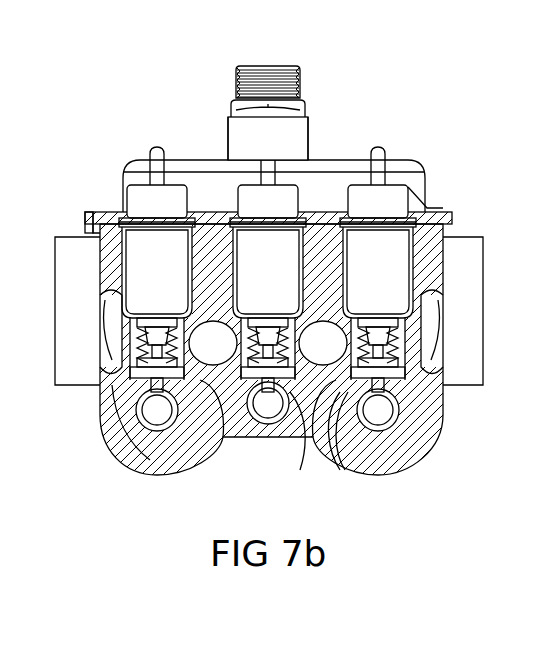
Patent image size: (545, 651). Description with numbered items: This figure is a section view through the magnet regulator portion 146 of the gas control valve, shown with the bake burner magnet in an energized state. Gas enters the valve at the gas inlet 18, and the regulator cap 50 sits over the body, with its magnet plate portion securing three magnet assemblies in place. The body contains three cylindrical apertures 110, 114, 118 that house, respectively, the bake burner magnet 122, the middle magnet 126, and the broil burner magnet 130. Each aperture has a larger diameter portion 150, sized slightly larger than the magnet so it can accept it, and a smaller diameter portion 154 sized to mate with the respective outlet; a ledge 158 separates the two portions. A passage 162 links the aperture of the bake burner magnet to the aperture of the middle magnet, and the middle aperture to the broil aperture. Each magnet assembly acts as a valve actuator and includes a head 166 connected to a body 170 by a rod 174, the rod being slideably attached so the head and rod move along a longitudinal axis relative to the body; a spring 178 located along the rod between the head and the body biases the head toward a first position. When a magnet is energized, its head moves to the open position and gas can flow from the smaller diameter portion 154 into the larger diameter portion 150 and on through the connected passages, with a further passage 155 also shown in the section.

The gas inlet 18 is at (483, 244).
The regulator cap 50 is at (135, 162).
The cylindrical aperture 110 is at (92, 226).
The cylindrical aperture 114 is at (212, 335).
The cylindrical aperture 118 is at (448, 217).
The bake burner magnet 122 is at (140, 198).
The middle magnet 126 is at (330, 337).
The broil burner magnet 130 is at (412, 190).
The magnet regulator portion 146 is at (420, 452).
The larger diameter portion 150 is at (430, 330).
The smaller diameter portion 154 is at (412, 400).
The passage 155 is at (345, 468).
The ledge 158 is at (398, 390).
The passage 162 is at (400, 185).
The head 166 is at (427, 372).
The body 170 is at (171, 282).
The rod 174 is at (410, 344).
The spring 178 is at (400, 336).